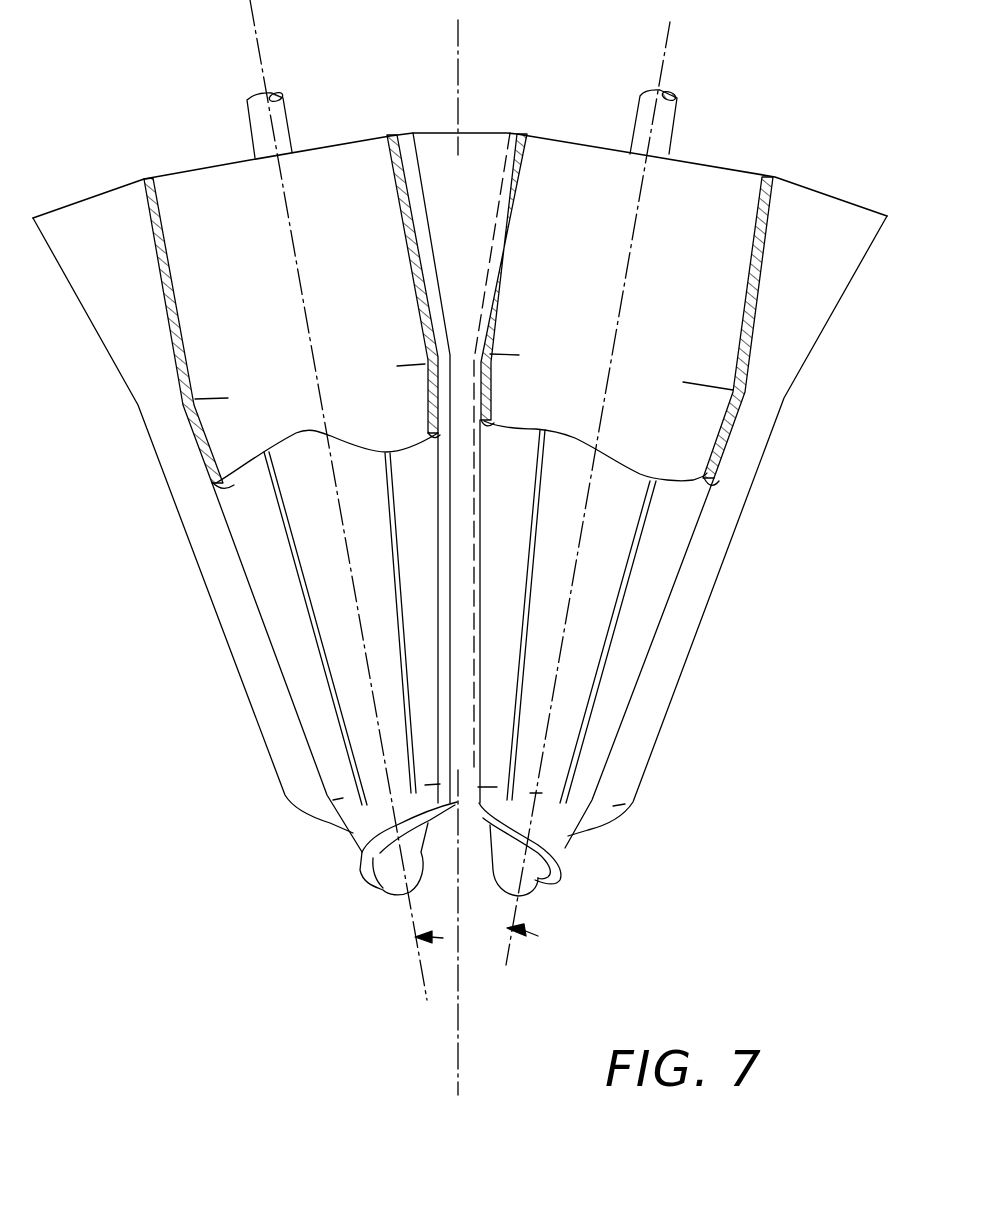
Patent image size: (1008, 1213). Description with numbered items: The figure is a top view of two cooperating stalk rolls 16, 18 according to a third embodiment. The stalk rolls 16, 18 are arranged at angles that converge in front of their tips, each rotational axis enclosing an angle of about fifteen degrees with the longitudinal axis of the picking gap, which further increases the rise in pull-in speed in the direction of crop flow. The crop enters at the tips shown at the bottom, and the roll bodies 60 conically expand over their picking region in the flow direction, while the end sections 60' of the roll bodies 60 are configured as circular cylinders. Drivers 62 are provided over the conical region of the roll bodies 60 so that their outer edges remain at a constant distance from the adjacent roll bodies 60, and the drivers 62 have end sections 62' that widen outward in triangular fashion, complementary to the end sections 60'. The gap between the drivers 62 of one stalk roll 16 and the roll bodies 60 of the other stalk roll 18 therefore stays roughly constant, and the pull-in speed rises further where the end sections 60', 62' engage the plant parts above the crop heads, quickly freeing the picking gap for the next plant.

The stalk roll 16 is at (200, 758).
The stalk roll 18 is at (772, 633).
The roll body 60 is at (492, 617).
The end section of roll body 60' is at (436, 411).
The driver 62 is at (231, 515).
The end section of driver 62' is at (193, 484).